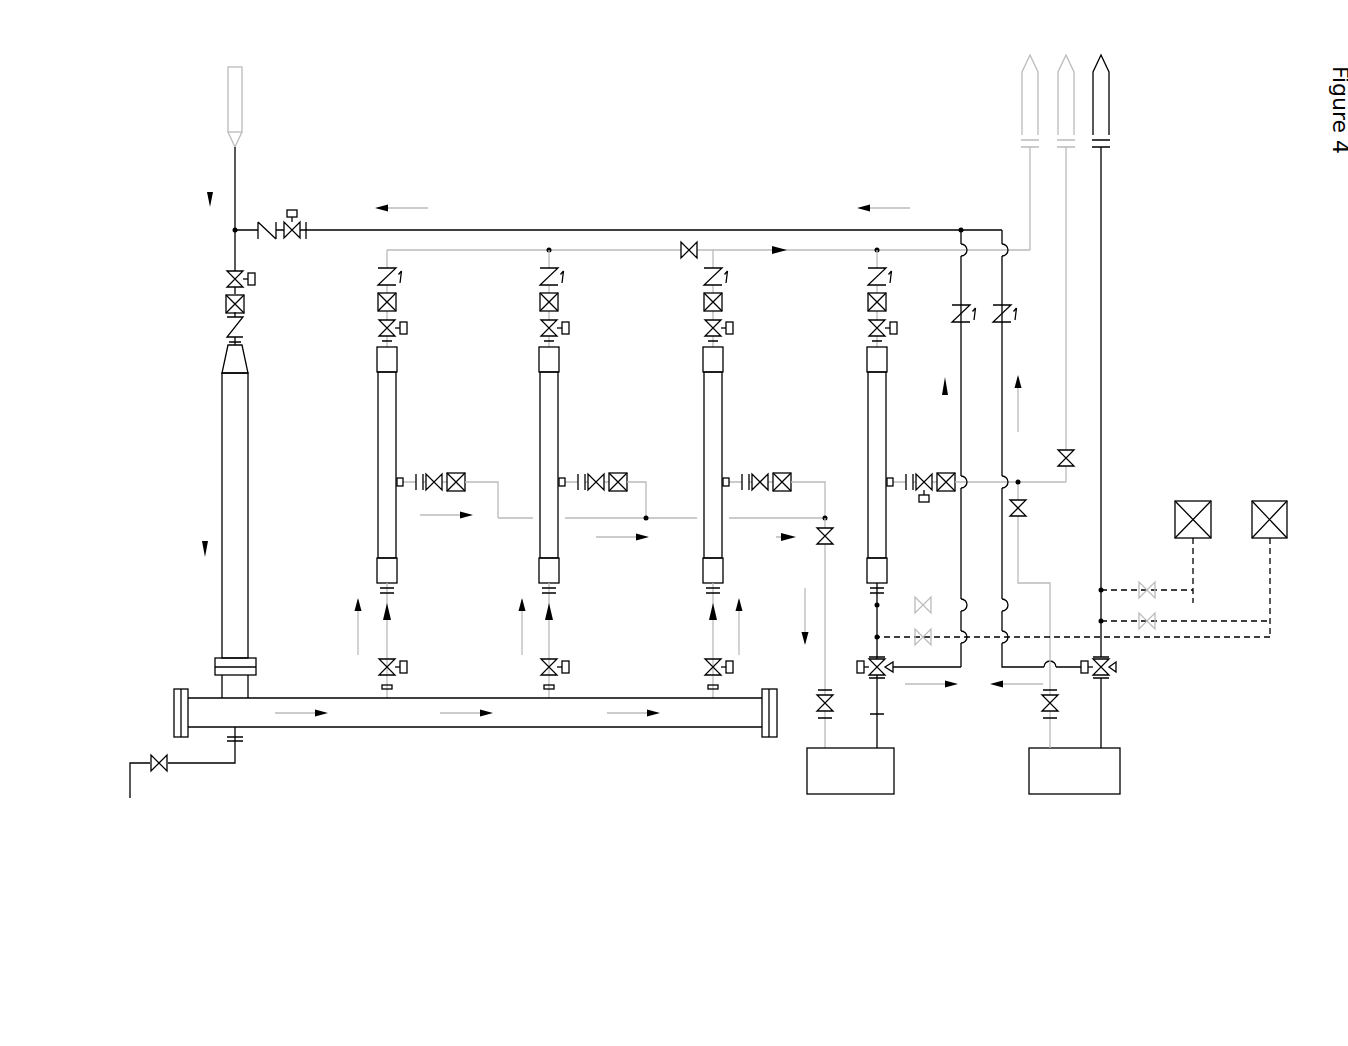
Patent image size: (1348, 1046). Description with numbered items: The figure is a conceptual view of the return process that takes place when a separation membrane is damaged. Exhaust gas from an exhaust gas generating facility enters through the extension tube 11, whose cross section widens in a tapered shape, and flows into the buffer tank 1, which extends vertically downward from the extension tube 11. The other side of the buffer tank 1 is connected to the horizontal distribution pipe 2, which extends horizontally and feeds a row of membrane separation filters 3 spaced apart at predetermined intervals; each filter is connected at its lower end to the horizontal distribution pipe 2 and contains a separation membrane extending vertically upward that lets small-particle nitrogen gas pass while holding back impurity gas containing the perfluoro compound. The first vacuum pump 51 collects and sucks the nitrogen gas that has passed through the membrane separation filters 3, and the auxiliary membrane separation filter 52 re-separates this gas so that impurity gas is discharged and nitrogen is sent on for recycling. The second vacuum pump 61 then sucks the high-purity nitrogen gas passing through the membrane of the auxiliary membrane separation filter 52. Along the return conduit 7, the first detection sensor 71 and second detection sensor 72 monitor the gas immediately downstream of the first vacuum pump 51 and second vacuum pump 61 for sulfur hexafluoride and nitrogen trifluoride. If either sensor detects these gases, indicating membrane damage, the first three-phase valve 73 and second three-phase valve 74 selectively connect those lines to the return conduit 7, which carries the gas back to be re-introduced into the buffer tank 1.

The buffer tank 1 is at (245, 472).
The extension tube 11 is at (237, 352).
The horizontal distribution pipe 2 is at (357, 718).
The membrane separation filters 3 is at (392, 540).
The return conduit 7 is at (636, 230).
The first vacuum pump 51 is at (850, 778).
The auxiliary membrane separation filter 52 is at (868, 392).
The second vacuum pump 61 is at (1072, 778).
The first detection sensor 71 is at (1195, 500).
The second detection sensor 72 is at (1268, 500).
The first three-phase valve 73 is at (890, 676).
The second three-phase valve 74 is at (1116, 667).